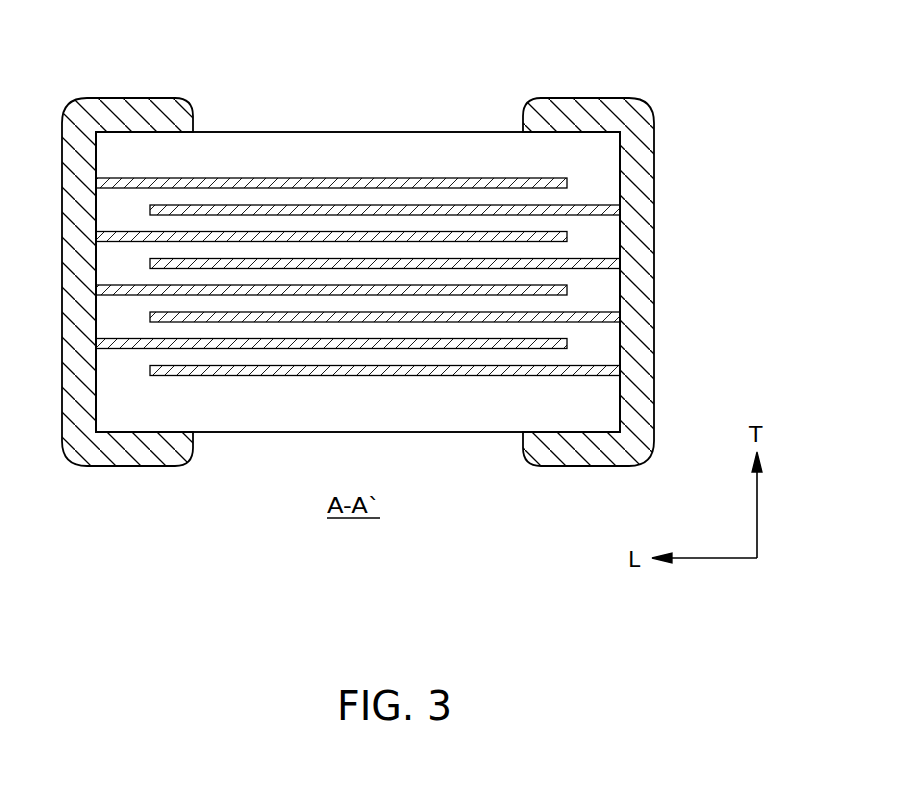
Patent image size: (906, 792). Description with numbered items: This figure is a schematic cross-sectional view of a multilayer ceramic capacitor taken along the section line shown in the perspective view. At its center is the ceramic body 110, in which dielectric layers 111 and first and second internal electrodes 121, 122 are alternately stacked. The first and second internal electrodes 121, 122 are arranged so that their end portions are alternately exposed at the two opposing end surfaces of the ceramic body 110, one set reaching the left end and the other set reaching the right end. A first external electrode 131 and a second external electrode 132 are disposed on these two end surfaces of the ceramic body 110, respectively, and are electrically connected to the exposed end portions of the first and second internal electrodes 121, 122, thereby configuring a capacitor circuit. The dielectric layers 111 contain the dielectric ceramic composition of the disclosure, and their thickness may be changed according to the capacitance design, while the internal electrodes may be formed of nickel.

The ceramic body 110 is at (527, 132).
The dielectric layer 111 is at (255, 252).
The first internal electrode 121 is at (378, 238).
The second internal electrode 122 is at (480, 262).
The first external electrode 131 is at (138, 117).
The second external electrode 132 is at (578, 117).